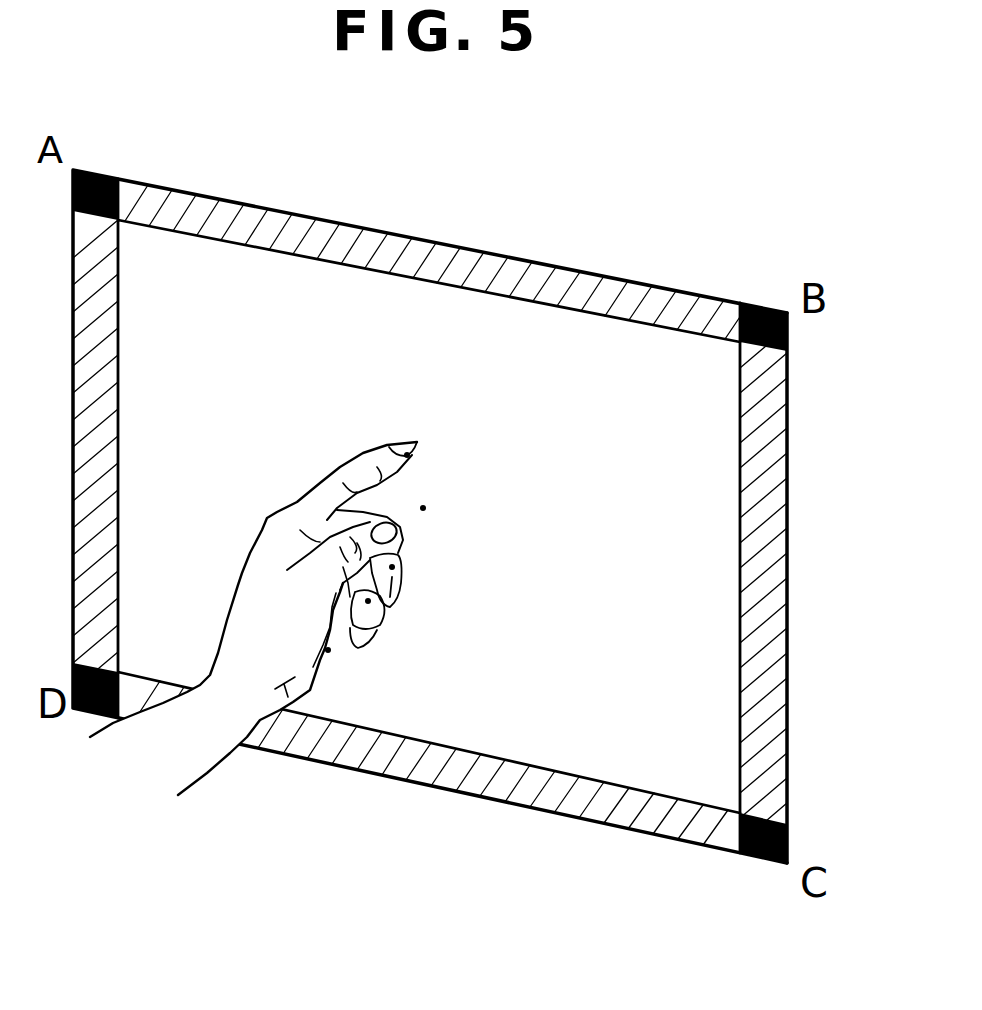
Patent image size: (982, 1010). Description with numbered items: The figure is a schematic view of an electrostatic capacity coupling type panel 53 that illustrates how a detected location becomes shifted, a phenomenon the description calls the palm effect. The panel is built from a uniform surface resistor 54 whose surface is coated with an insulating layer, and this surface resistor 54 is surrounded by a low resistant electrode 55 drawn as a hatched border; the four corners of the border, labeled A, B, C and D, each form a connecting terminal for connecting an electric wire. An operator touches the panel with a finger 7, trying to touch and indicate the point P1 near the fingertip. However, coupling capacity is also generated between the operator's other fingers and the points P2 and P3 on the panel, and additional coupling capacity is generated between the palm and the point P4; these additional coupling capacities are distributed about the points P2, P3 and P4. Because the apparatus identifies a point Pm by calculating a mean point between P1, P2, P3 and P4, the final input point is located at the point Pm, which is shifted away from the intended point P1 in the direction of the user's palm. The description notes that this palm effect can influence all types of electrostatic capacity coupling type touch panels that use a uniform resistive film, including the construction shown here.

The finger 7 is at (272, 535).
The electrostatic capacity coupling type panel 53 is at (476, 500).
The uniform surface resistor with a surface coated with an insulating layer 54 is at (548, 400).
The low resistant electrode 55 is at (787, 498).
The point P1 is at (407, 455).
The point P2 is at (392, 567).
The point P3 is at (368, 601).
The point P4 is at (328, 650).
The point Pm is at (454, 523).